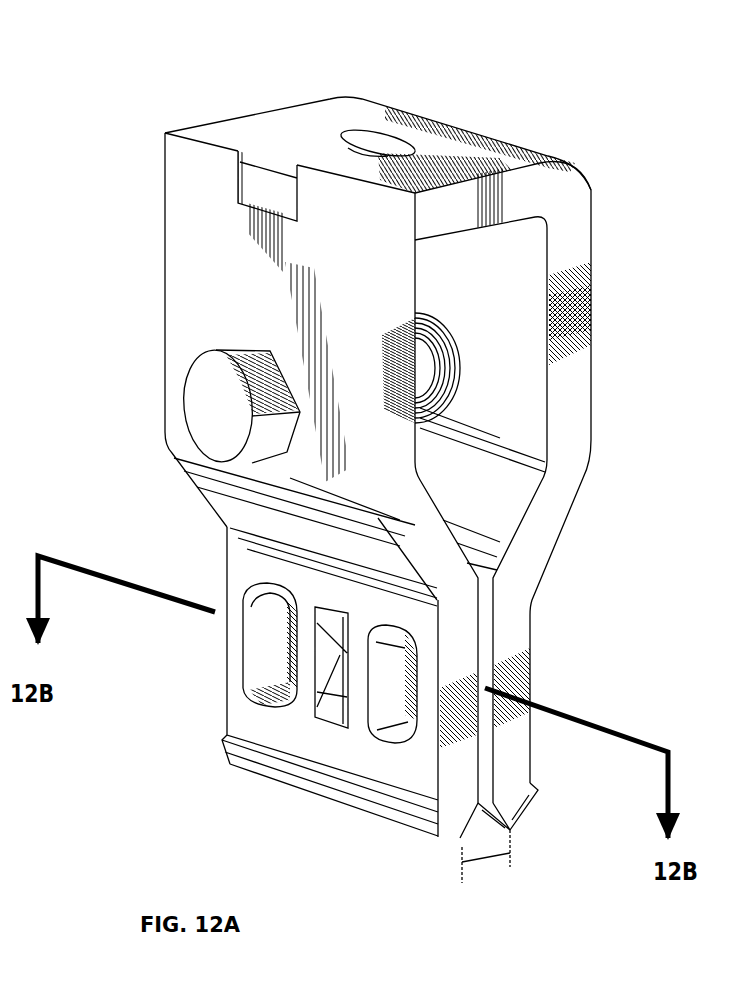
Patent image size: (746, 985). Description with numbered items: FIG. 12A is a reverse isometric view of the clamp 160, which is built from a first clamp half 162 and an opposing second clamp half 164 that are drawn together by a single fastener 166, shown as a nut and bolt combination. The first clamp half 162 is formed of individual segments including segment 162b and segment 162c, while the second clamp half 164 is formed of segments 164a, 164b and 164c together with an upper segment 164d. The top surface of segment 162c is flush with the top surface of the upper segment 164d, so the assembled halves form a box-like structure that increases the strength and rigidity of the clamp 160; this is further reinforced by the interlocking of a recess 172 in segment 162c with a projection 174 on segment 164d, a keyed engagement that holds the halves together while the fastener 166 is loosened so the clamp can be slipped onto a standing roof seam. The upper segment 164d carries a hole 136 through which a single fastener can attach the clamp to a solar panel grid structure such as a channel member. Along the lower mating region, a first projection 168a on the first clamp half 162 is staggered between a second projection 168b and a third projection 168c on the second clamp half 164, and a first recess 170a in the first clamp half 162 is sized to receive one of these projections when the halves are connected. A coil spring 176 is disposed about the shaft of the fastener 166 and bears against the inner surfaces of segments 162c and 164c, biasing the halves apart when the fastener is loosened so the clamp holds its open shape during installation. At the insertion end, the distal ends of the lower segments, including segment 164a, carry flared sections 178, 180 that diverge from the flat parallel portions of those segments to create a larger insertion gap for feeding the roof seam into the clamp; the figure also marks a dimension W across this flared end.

The clamp 160 is at (130, 72).
The first clamp half 162 is at (220, 293).
The segment 162b is at (185, 488).
The segment 162c is at (163, 255).
The second clamp half 164 is at (560, 268).
The segment 164a is at (537, 727).
The segment 164b is at (552, 540).
The segment 164c is at (598, 380).
The upper segment 164d is at (468, 142).
The fastener 166 is at (207, 421).
The first projection 168a is at (333, 710).
The second projection 168b is at (287, 670).
The third projection 168c is at (410, 700).
The first recess 170a is at (262, 643).
The recess 172 is at (233, 182).
The projection 174 is at (275, 162).
The spring 176 is at (458, 340).
The flared section 178 is at (452, 832).
The flared section 180 is at (537, 808).
The hole 136 is at (397, 140).
The width W is at (485, 863).